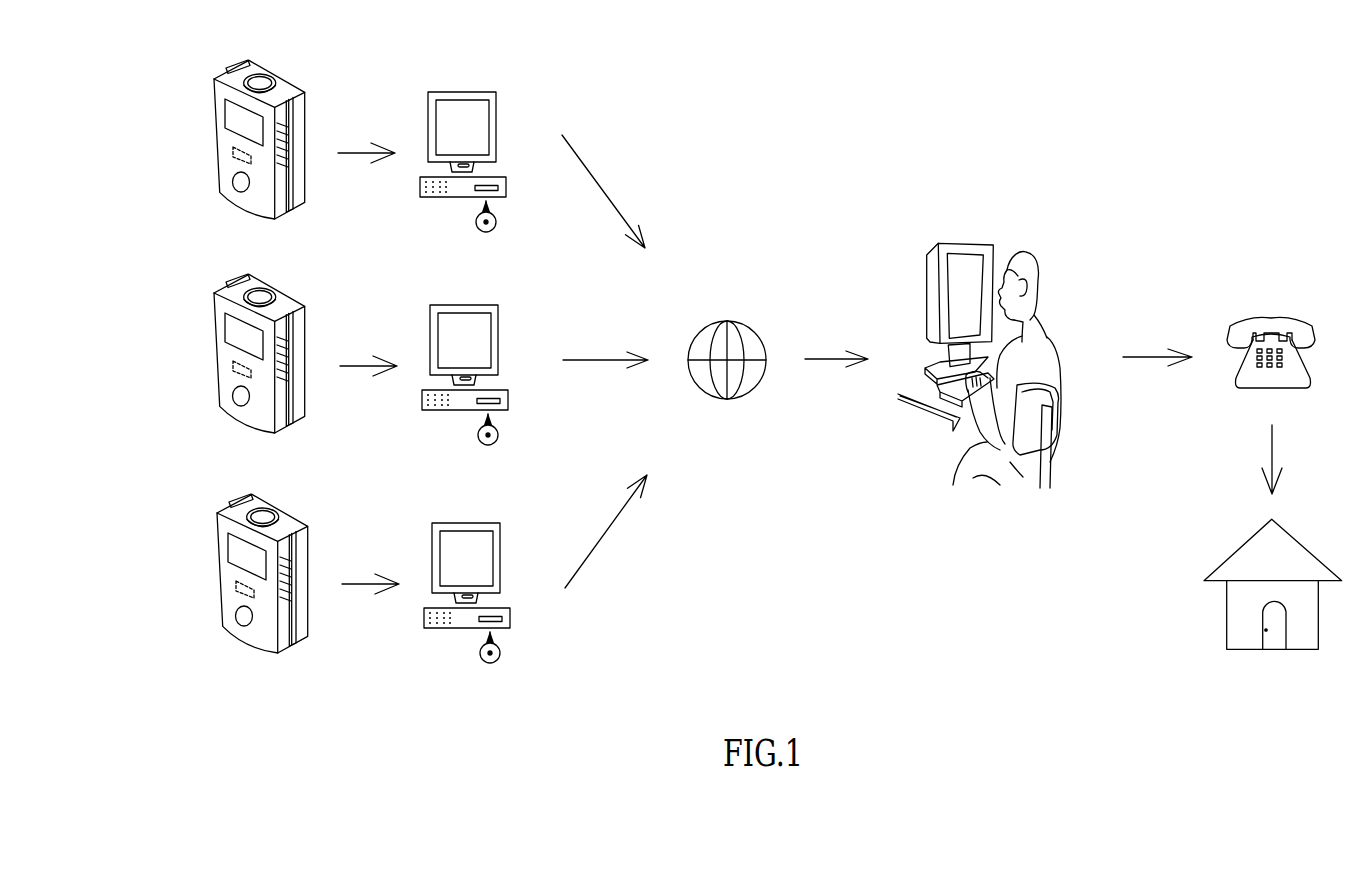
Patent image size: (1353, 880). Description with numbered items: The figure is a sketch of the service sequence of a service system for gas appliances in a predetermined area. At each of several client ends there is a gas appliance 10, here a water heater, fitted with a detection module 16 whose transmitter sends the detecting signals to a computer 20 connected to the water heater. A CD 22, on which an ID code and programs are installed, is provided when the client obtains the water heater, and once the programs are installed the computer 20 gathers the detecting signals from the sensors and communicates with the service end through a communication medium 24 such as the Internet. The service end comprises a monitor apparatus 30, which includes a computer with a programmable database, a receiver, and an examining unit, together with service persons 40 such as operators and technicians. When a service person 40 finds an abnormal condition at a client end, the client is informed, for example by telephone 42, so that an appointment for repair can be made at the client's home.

The gas appliance 10 is at (222, 356).
The detection module 16 is at (208, 385).
The computer 20 is at (467, 372).
The CD 22 is at (524, 437).
The communication medium 24 is at (755, 332).
The monitor apparatus 30 is at (962, 240).
The service persons 40 is at (1063, 353).
The telephone 42 is at (1252, 320).